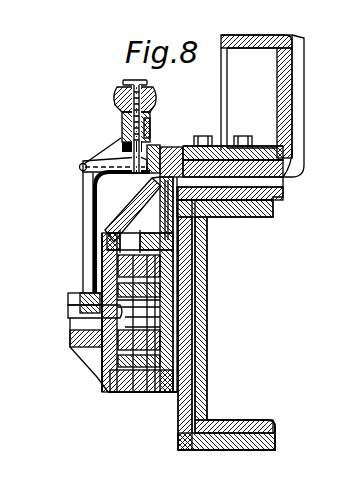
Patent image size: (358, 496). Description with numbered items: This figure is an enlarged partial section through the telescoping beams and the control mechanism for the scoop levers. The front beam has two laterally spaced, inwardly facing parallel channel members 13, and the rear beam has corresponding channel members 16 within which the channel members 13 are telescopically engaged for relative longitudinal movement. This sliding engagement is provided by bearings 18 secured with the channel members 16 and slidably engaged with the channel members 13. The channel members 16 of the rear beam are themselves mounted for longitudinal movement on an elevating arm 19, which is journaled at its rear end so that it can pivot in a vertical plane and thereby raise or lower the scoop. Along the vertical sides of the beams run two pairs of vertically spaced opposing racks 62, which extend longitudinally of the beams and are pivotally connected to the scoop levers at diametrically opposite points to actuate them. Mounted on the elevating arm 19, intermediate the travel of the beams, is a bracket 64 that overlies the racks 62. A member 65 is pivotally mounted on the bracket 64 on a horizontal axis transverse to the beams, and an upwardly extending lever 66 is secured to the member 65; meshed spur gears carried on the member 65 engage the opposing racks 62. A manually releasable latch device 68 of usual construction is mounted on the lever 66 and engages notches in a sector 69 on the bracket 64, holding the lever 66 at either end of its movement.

The channel members 13 is at (208, 320).
The channel members 16 is at (193, 357).
The bearings 18 is at (242, 420).
The elevating arm 19 is at (292, 116).
The racks 62 is at (163, 247).
The bracket 64 is at (128, 212).
The member 65 is at (93, 262).
The lever 66 is at (152, 122).
The latch device 68 is at (155, 88).
The sector 69 is at (100, 143).